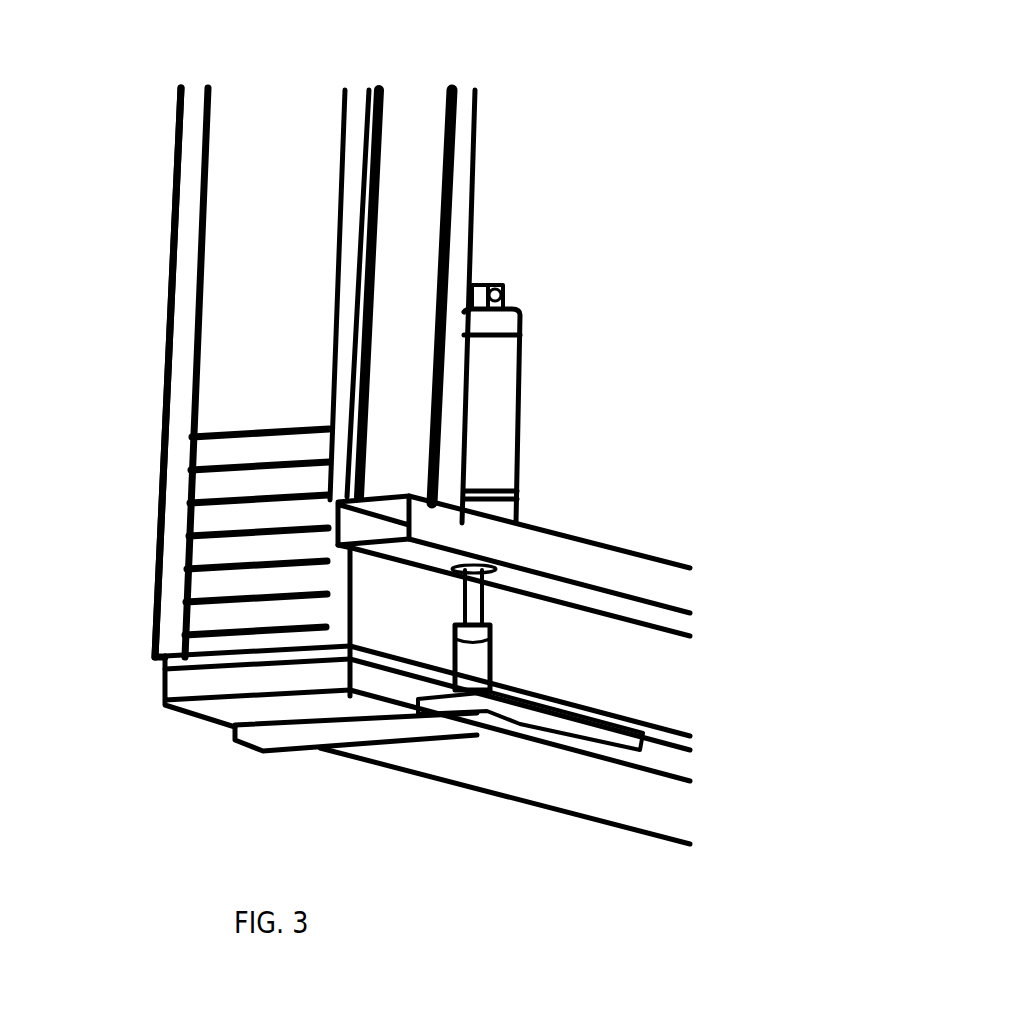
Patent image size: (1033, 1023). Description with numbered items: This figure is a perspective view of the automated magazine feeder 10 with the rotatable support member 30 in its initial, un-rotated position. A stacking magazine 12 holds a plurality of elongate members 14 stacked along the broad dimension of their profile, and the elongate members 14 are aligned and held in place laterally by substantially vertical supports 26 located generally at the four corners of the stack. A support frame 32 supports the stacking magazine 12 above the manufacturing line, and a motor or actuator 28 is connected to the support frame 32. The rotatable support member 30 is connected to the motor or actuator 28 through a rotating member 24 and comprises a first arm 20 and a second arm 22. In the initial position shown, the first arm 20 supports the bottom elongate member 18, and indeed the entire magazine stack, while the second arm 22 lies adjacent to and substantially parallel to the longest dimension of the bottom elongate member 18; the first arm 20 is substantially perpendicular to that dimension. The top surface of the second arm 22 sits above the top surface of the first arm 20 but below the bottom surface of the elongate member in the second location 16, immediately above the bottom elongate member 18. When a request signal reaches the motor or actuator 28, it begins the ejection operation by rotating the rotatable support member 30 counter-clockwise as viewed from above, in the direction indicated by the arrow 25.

The automated magazine feeder 10 is at (646, 151).
The stacking magazine 12 is at (238, 252).
The elongate members 14 is at (255, 425).
The second location 16 is at (203, 652).
The bottom elongate member 18 is at (187, 690).
The first arm 20 is at (367, 738).
The second arm 22 is at (593, 725).
The rotating member 24 is at (477, 652).
The arrow 25 is at (436, 640).
The substantially vertical supports 26 is at (192, 117).
The motor or actuator 28 is at (503, 385).
The rotatable support member 30 is at (314, 755).
The support frame 32 is at (465, 115).